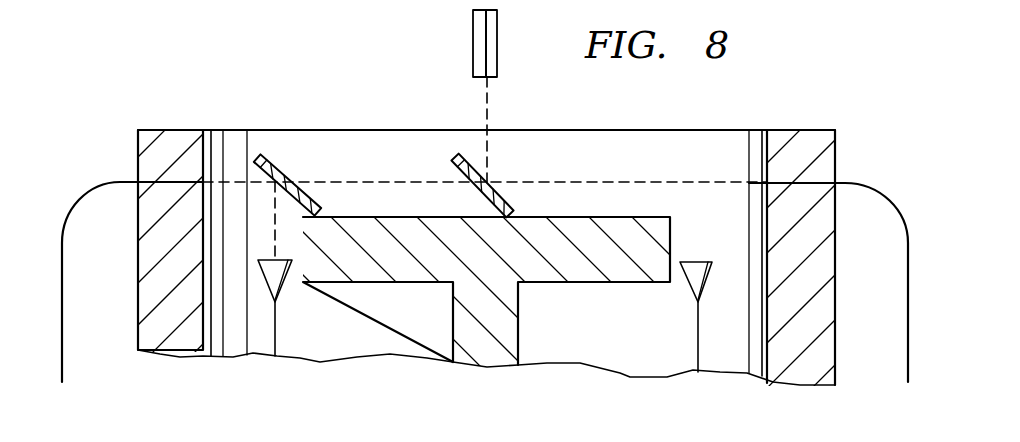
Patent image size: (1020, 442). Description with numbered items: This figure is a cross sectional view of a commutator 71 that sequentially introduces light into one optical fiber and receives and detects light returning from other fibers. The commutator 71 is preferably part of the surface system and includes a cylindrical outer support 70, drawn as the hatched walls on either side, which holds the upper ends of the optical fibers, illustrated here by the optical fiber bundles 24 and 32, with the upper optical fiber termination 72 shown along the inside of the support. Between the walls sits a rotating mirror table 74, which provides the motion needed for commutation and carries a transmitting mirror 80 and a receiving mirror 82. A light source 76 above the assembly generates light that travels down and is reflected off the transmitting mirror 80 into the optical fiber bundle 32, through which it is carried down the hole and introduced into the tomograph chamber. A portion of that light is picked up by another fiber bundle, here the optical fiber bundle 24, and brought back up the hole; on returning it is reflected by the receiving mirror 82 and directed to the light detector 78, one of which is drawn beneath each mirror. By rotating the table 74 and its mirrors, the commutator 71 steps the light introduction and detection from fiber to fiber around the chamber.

The optical fiber bundle 24 is at (100, 183).
The optical fiber bundle 32 is at (876, 189).
The cylindrical outer support 70 is at (158, 130).
The commutator 71 is at (365, 72).
The upper optical fiber termination 72 is at (207, 186).
The rotating mirror table 74 is at (500, 263).
The light source 76 is at (474, 34).
The light detector 78 is at (284, 285).
The transmitting mirror 80 is at (455, 161).
The receiving mirror 82 is at (290, 181).